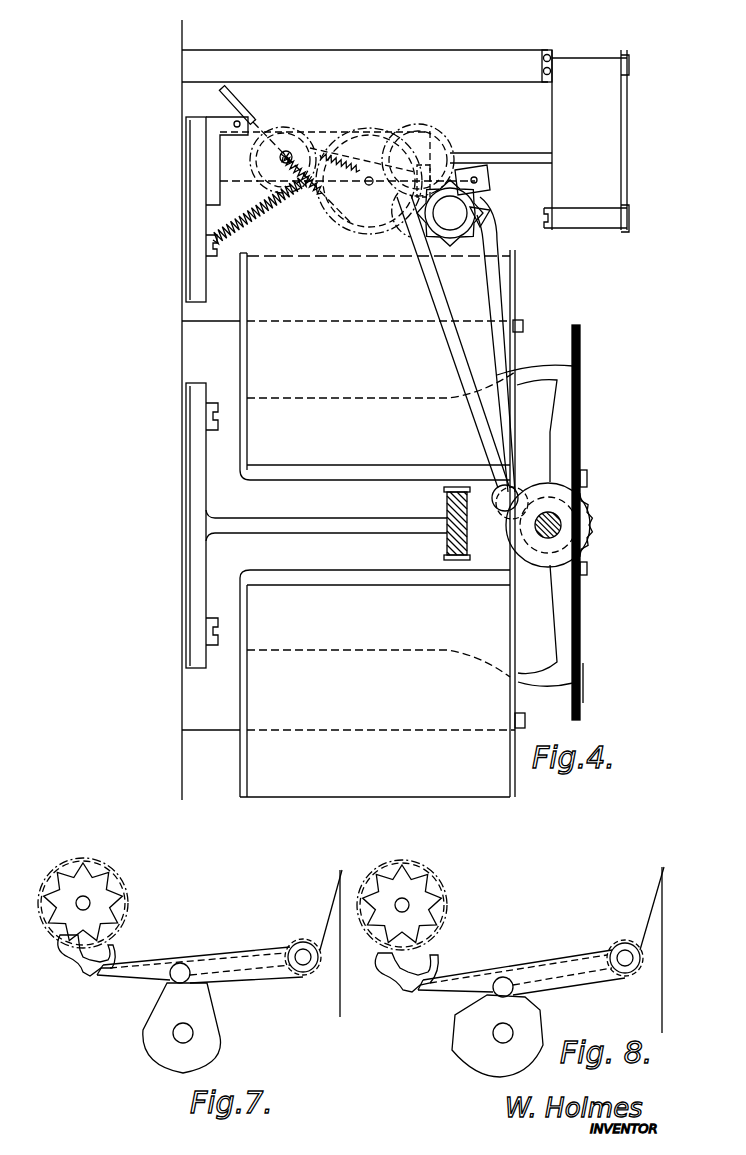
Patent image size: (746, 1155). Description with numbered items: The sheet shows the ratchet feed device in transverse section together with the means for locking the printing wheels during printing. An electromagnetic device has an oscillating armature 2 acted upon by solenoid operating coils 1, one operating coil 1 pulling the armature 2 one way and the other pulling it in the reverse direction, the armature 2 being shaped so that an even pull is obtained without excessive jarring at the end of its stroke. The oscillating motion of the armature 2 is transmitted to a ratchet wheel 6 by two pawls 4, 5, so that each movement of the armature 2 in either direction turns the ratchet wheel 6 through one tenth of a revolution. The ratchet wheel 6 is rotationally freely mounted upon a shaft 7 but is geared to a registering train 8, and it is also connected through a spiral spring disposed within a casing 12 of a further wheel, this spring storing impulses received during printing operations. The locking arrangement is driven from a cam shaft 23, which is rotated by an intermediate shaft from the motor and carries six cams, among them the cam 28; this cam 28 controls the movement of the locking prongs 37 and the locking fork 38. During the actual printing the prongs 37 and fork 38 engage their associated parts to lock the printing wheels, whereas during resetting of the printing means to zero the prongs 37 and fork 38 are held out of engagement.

In FIG. 4, the operating coil 1 is at (382, 523).
In FIG. 4, the oscillating armature 2 is at (563, 440).
In FIG. 4, the pawl 4 is at (497, 287).
In FIG. 4, the pawl 5 is at (450, 347).
In FIG. 4, the ratchet wheel 6 is at (480, 213).
In FIG. 4, the shaft 7 is at (455, 250).
In FIG. 7, the shaft 7 is at (88, 903).
In FIG. 8, the shaft 7 is at (407, 905).
In FIG. 4, the registering train 8 is at (586, 141).
In FIG. 4, the casing 12 is at (246, 118).
In FIG. 7, the cam shaft 23 is at (185, 1033).
In FIG. 8, the cam shaft 23 is at (505, 1033).
In FIG. 7, the cam 28 is at (170, 1058).
In FIG. 8, the cam 28 is at (467, 1035).
In FIG. 7, the locking prongs 37 is at (163, 953).
In FIG. 8, the locking prongs 37 is at (483, 963).
In FIG. 7, the locking fork 38 is at (110, 952).
In FIG. 8, the locking fork 38 is at (432, 958).